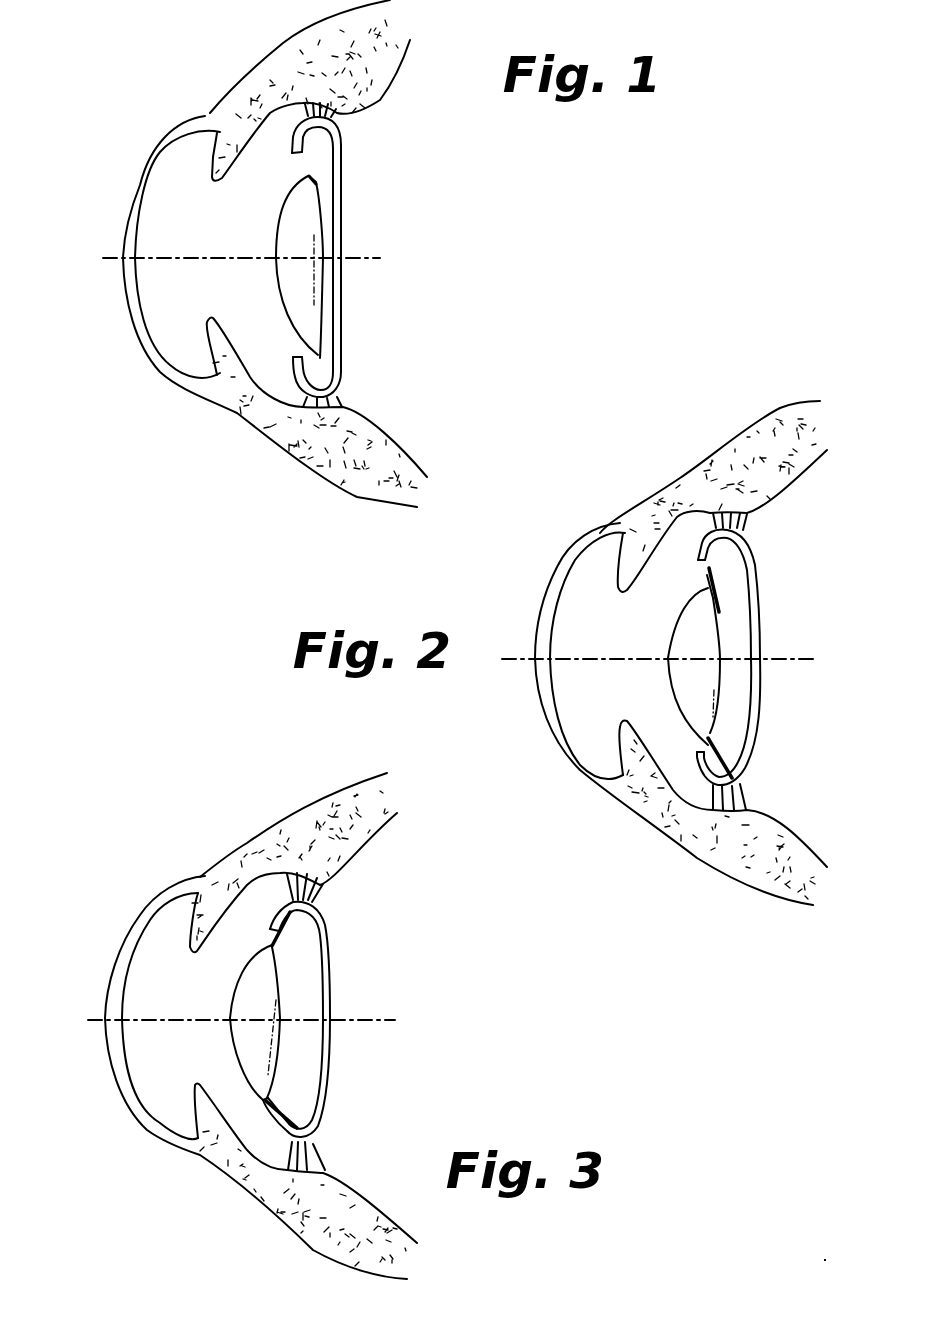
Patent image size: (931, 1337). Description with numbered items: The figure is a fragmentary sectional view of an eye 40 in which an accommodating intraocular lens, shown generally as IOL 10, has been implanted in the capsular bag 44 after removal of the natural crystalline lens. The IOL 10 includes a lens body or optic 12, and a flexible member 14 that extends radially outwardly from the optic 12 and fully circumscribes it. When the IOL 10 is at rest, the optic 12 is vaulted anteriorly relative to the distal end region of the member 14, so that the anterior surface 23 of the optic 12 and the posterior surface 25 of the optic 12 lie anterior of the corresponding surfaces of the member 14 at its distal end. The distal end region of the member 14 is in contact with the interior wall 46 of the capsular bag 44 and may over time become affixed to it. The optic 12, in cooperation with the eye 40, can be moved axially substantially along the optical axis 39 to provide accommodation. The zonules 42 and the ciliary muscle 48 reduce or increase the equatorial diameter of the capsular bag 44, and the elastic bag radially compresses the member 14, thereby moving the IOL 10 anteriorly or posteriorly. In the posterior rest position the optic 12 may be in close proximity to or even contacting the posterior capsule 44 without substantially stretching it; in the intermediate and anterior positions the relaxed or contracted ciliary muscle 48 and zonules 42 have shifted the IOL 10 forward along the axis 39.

In FIG. 1, the IOL 10 is at (223, 288).
In FIG. 2, the IOL 10 is at (661, 686).
In FIG. 3, the IOL 10 is at (284, 1043).
In FIG. 1, the optic 12 is at (303, 308).
In FIG. 2, the optic 12 is at (687, 689).
In FIG. 3, the optic 12 is at (235, 1053).
In FIG. 1, the member 14 is at (310, 168).
In FIG. 2, the member 14 is at (702, 573).
In FIG. 3, the member 14 is at (263, 1098).
In FIG. 1, the anterior surface of optic 23 is at (307, 175).
In FIG. 2, the anterior surface of optic 23 is at (700, 733).
In FIG. 3, the anterior surface of optic 23 is at (243, 960).
In FIG. 2, the posterior surface of optic 25 is at (720, 718).
In FIG. 3, the posterior surface of optic 25 is at (288, 1005).
In FIG. 1, the optical axis 39 is at (148, 258).
In FIG. 2, the optical axis 39 is at (787, 663).
In FIG. 3, the optical axis 39 is at (373, 1022).
In FIG. 1, the eye 40 is at (281, 253).
In FIG. 2, the eye 40 is at (664, 653).
In FIG. 3, the eye 40 is at (277, 1024).
In FIG. 1, the zonules 42 is at (338, 113).
In FIG. 2, the zonules 42 is at (743, 518).
In FIG. 3, the zonules 42 is at (327, 885).
In FIG. 1, the capsular bag 44 is at (382, 257).
In FIG. 2, the capsular bag 44 is at (765, 658).
In FIG. 3, the capsular bag 44 is at (361, 1019).
In FIG. 1, the interior wall of the capsular bag 46 is at (330, 148).
In FIG. 2, the interior wall of the capsular bag 46 is at (740, 556).
In FIG. 3, the interior wall of the capsular bag 46 is at (330, 930).
In FIG. 1, the ciliary muscle 48 is at (303, 105).
In FIG. 2, the ciliary muscle 48 is at (740, 497).
In FIG. 3, the ciliary muscle 48 is at (302, 867).